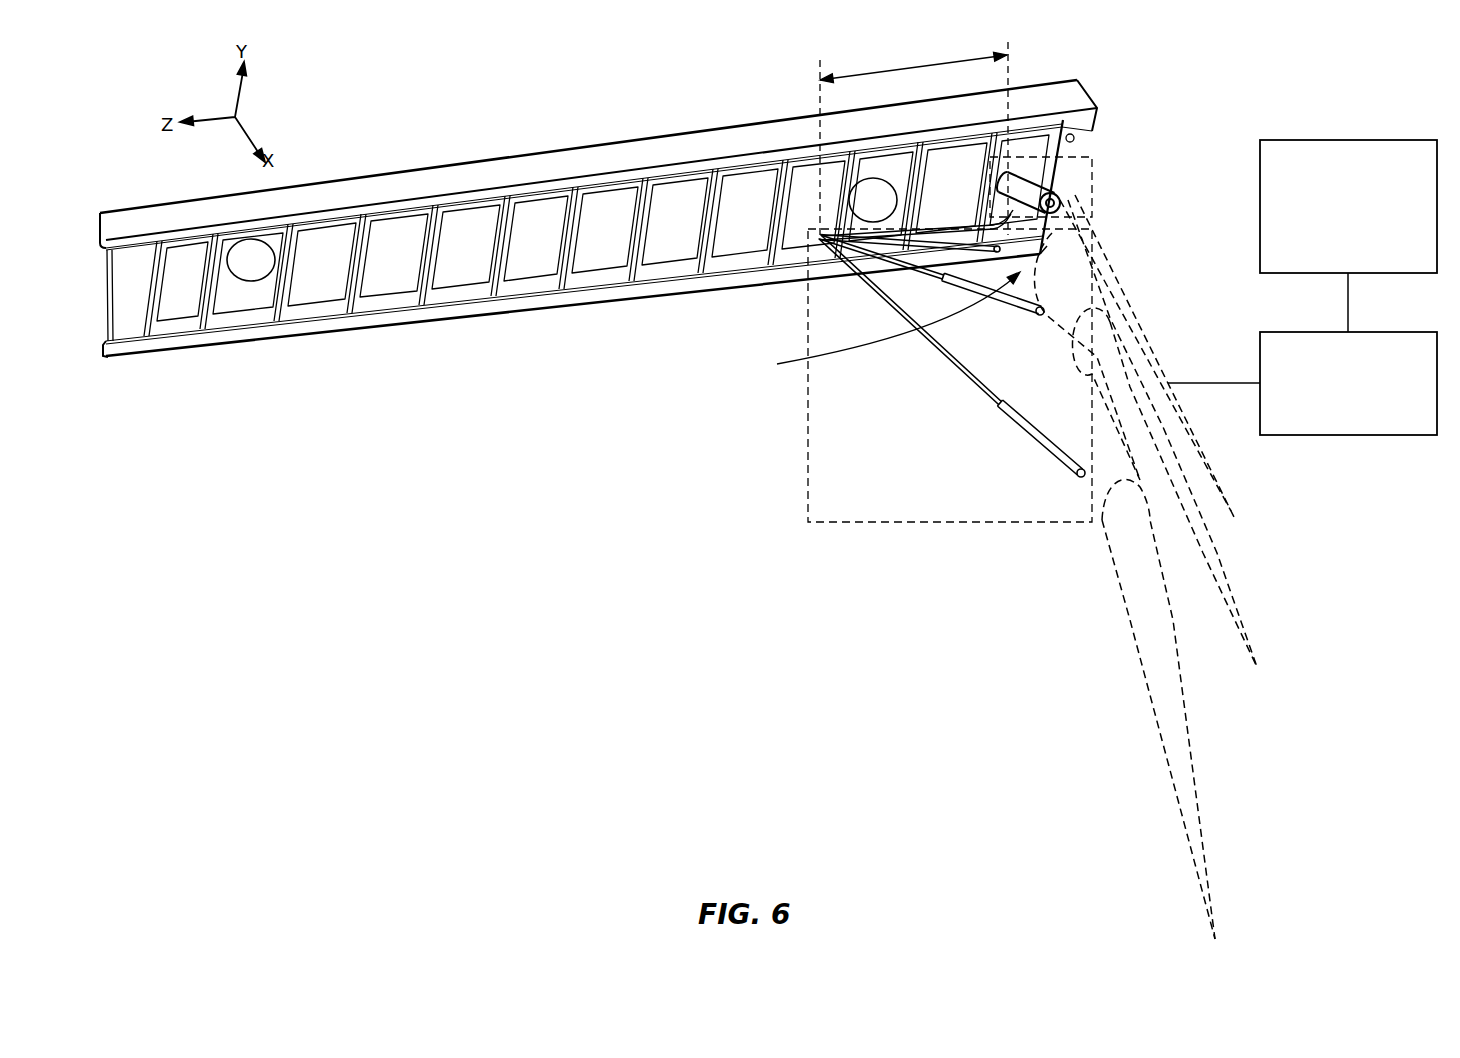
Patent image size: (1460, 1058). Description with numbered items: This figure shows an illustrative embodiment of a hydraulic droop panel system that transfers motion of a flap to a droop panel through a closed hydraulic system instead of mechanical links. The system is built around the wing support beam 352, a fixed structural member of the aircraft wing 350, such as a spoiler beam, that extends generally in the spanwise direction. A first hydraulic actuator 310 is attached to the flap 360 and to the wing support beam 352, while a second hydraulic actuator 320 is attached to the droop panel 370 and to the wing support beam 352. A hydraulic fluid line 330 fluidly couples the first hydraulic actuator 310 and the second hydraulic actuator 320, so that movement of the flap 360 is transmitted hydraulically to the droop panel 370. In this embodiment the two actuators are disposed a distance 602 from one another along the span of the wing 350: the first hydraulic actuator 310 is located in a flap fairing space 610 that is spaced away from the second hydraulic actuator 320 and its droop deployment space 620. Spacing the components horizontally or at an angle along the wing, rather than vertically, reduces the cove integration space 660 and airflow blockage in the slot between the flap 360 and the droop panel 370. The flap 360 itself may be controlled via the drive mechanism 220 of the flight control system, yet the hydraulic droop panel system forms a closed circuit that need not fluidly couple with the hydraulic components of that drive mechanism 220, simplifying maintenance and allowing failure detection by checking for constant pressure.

The wing support beam 352 is at (673, 143).
The distance 602 is at (919, 66).
The second hydraulic actuator 320 is at (1032, 170).
The hydraulic fluid line 330 is at (958, 212).
The droop deployment space 620 is at (1093, 178).
The flap fairing space 610 is at (853, 523).
The first hydraulic actuator 310 is at (920, 380).
The cove integration space 660 is at (877, 324).
The droop panel 370 is at (1117, 250).
The flap 360 is at (1273, 527).
The aircraft wing 350 is at (1348, 236).
The drive mechanism 220 is at (1302, 383).